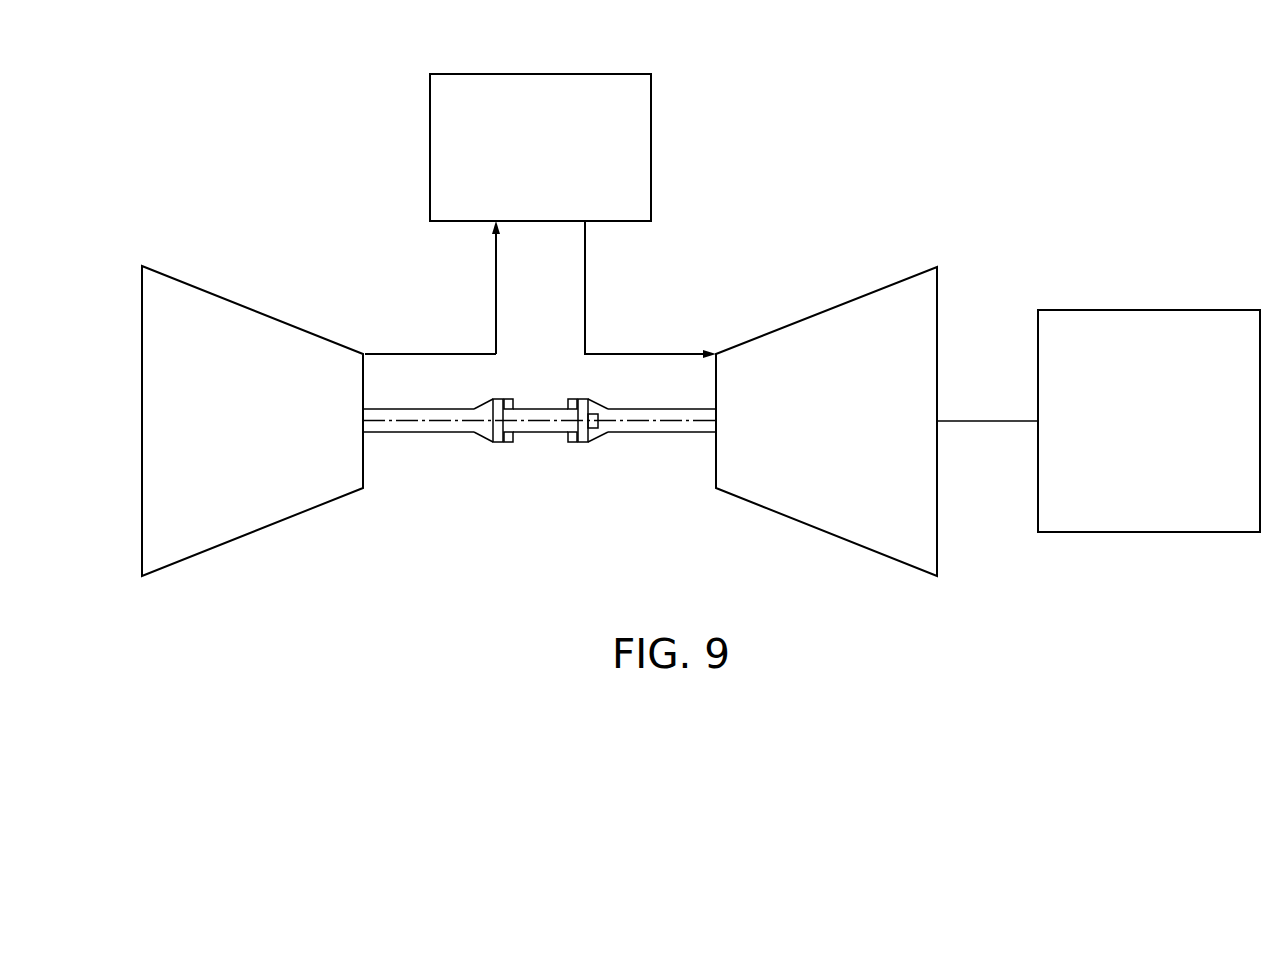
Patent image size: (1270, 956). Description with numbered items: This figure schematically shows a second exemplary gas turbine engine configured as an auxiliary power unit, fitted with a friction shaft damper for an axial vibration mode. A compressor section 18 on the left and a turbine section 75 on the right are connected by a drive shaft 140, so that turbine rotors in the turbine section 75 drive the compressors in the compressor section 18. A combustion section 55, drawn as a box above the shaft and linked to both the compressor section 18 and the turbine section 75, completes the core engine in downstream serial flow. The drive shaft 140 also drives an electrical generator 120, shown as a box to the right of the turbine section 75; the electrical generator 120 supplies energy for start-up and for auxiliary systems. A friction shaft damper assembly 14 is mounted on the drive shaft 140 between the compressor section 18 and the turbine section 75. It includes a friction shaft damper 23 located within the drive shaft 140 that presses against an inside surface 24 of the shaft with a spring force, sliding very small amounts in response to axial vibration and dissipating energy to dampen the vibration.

The friction shaft damper assembly 14 is at (541, 484).
The compressor section 18 is at (257, 431).
The friction shaft damper 23 is at (521, 407).
The inside surface 24 is at (548, 405).
The combustion section 55 is at (555, 163).
The turbine section 75 is at (830, 431).
The electrical generator 120 is at (1159, 431).
The drive shaft 140 is at (653, 433).